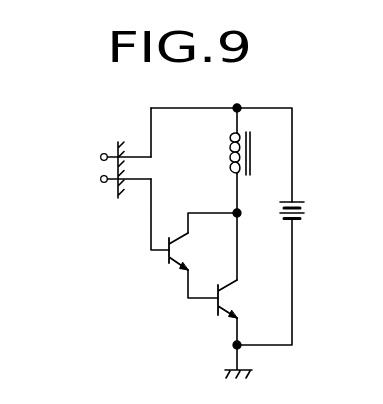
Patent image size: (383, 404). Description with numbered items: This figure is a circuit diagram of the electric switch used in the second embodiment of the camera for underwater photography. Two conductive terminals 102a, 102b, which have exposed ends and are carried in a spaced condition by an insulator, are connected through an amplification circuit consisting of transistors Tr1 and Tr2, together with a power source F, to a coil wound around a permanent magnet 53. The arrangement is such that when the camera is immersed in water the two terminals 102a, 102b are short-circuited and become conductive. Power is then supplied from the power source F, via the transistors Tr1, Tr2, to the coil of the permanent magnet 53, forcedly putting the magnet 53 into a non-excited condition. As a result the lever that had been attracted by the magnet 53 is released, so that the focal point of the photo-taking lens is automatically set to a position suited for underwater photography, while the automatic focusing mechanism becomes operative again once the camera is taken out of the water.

The conductive terminal 102a is at (100, 156).
The conductive terminal 102b is at (103, 182).
The permanent magnet 53 is at (231, 161).
The transistor Tr1 is at (167, 262).
The transistor Tr2 is at (216, 312).
The power source F is at (305, 207).